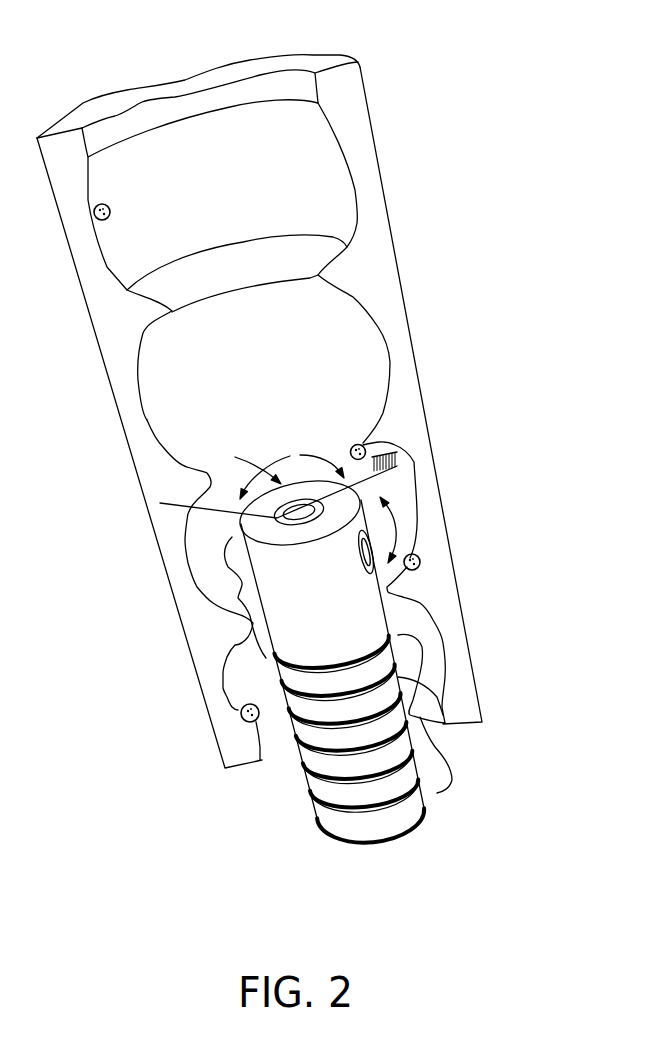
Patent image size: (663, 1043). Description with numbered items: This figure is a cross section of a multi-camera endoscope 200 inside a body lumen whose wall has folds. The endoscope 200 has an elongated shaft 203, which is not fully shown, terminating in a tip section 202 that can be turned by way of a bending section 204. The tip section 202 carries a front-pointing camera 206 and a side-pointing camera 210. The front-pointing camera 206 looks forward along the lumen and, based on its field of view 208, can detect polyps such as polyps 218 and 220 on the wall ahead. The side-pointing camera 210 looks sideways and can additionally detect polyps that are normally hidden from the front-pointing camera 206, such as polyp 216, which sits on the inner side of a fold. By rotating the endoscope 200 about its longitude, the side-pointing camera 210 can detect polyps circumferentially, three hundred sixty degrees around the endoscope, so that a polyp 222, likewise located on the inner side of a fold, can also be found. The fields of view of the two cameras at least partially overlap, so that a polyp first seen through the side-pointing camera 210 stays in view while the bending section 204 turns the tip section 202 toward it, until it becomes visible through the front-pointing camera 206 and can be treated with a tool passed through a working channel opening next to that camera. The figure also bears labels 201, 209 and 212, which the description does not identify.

The multi-camera endoscope 200 is at (278, 471).
The bone 201 is at (128, 80).
The tip section 202 is at (248, 513).
The elongated shaft 203 is at (288, 827).
The bending section 204 is at (438, 746).
The front-pointing camera 206 is at (224, 575).
The field of view 208 is at (186, 456).
The ledge 209 is at (383, 463).
The side-pointing camera 210 is at (341, 578).
The pivot member 212 is at (393, 518).
The polyp 216 is at (421, 562).
The polyp 218 is at (367, 447).
The polyp 220 is at (112, 210).
The polyp 222 is at (240, 710).